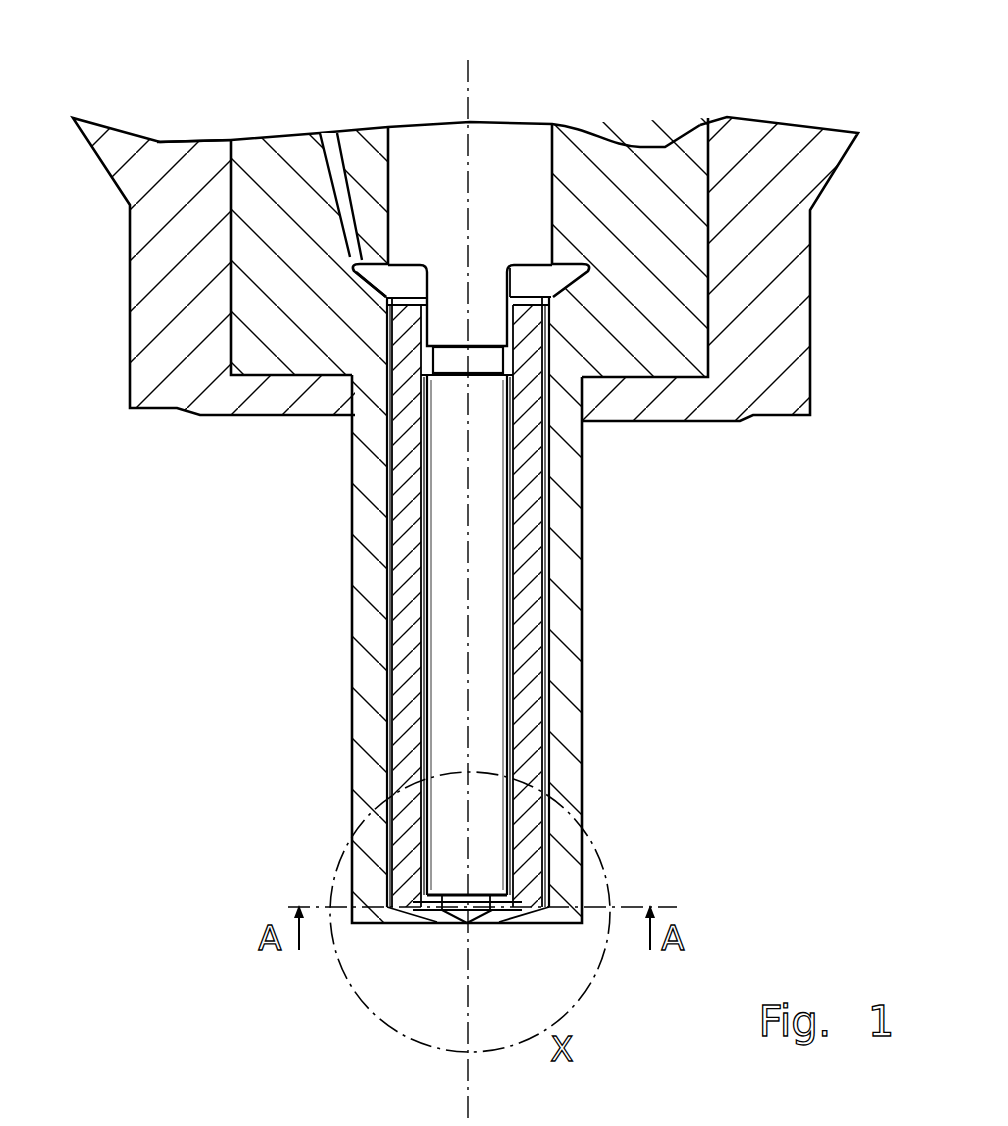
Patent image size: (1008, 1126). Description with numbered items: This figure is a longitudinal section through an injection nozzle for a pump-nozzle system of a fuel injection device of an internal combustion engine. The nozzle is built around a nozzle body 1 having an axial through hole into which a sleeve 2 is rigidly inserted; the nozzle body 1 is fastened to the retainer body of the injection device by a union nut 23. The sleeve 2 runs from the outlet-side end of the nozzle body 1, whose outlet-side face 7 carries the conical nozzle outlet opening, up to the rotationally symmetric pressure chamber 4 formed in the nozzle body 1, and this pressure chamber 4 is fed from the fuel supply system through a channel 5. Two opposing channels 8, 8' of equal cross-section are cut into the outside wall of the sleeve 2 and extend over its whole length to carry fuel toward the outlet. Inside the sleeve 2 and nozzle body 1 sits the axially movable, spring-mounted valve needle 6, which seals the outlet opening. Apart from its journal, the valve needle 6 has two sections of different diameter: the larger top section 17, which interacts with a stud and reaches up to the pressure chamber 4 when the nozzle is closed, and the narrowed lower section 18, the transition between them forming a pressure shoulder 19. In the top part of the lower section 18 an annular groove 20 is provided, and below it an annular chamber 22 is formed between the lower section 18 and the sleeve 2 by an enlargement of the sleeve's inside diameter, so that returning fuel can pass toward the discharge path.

The nozzle body 1 is at (567, 488).
The sleeve 2 is at (533, 584).
The pressure chamber 4 is at (353, 268).
The channel 5 is at (329, 137).
The valve needle 6 is at (442, 639).
The outlet-side face 7 is at (392, 925).
The channel 8 is at (730, 606).
The channel 8' is at (235, 606).
The top section 17 is at (508, 192).
The lower section 18 is at (487, 752).
The pressure shoulder 19 is at (383, 291).
The annular groove 20 is at (505, 357).
The annular chamber 22 is at (510, 678).
The union nut 23 is at (742, 252).